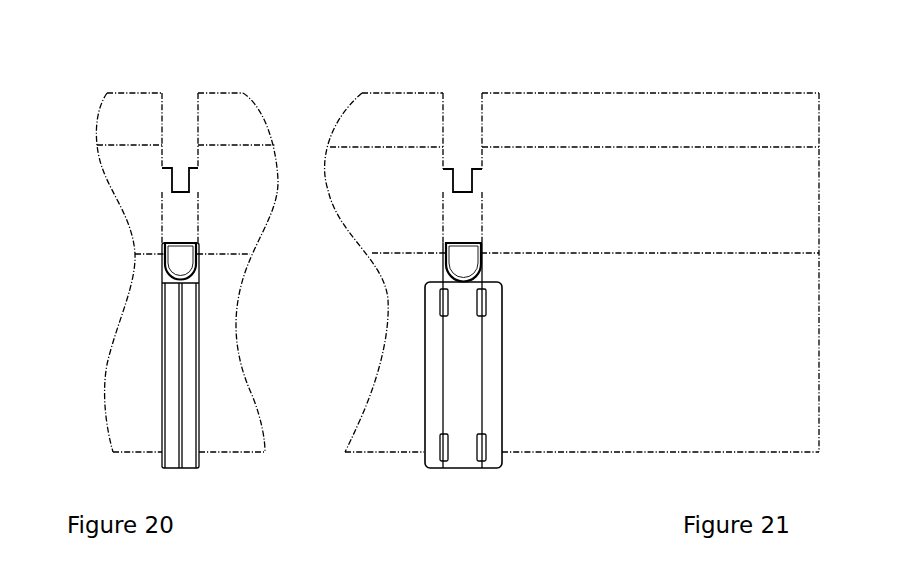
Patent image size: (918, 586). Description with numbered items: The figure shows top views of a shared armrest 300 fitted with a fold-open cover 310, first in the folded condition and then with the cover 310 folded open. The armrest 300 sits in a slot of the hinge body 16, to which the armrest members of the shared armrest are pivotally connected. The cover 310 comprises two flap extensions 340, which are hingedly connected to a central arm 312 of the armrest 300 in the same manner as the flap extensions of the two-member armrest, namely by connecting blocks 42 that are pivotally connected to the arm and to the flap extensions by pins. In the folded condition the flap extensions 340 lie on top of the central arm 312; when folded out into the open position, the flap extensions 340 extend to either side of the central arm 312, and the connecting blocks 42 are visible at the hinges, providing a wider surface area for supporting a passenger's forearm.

In FIG. 20, the hinge body 16 is at (168, 215).
In FIG. 21, the hinge body 16 is at (453, 198).
In FIG. 20, the shared armrest 300 is at (153, 375).
In FIG. 21, the shared armrest 300 is at (467, 395).
In FIG. 20, the fold-open cover 310 is at (172, 368).
In FIG. 21, the central arm 312 is at (466, 463).
In FIG. 20, the flap extensions 340 is at (168, 411).
In FIG. 21, the flap extensions 340 is at (427, 458).
In FIG. 21, the connecting blocks 42 is at (445, 302).